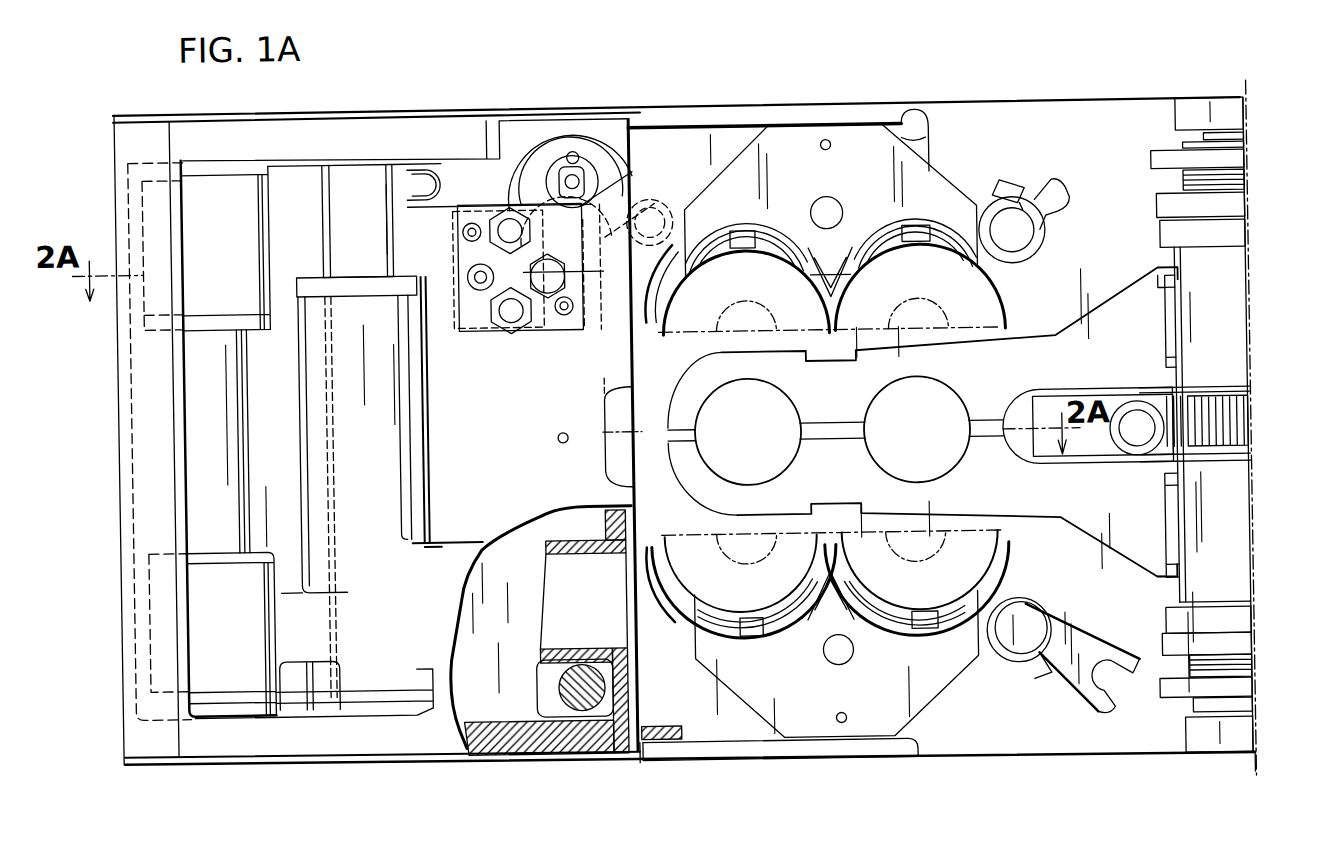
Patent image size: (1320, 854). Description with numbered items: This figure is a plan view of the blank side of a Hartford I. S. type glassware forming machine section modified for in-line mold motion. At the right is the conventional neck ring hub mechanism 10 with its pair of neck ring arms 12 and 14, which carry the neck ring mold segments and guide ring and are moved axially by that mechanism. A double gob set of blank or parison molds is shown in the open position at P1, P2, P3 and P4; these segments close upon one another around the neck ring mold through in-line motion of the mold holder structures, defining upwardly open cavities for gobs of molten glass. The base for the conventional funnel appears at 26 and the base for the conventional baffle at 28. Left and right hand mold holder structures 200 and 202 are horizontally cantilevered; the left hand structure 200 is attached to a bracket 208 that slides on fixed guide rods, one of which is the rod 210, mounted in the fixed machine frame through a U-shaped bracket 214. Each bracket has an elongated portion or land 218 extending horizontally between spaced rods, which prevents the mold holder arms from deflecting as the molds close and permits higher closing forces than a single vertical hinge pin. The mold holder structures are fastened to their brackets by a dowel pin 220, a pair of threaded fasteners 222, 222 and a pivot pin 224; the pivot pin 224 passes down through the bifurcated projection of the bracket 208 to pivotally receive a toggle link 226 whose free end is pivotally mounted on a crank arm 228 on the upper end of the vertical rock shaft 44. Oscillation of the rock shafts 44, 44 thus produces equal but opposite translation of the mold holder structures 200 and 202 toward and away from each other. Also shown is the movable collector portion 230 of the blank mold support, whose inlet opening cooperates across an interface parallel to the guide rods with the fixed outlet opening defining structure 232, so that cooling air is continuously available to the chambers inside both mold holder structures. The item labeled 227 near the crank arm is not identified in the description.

The neck ring hub mechanism 10 is at (1226, 565).
The neck ring arm 12 is at (1116, 554).
The neck ring arm 14 is at (1097, 312).
The funnel platform 26 is at (1035, 201).
The baffle platform 28 is at (1027, 675).
The rock shaft 44 is at (576, 150).
The left hand mold holder structure 200 is at (912, 115).
The right hand mold holder structure 202 is at (910, 762).
The bracket 208 is at (292, 208).
The guide rod 210 is at (303, 705).
The U-shaped bracket 214 is at (269, 153).
The elongated land portion 218 is at (446, 411).
The dowel pin 220 is at (475, 267).
The threaded fasteners 222 is at (498, 227).
The pivot pin 224 is at (566, 313).
The toggle link 226 is at (572, 291).
The alternate roller position 227 is at (666, 199).
The crank arm 228 is at (633, 198).
The movable collector portion 230 is at (647, 724).
The fixed outlet opening defining structure 232 is at (549, 549).
The blank mold segment P1 is at (830, 321).
The blank mold segment P2 is at (834, 543).
The blank mold segment P3 is at (918, 317).
The blank mold segment P4 is at (915, 541).